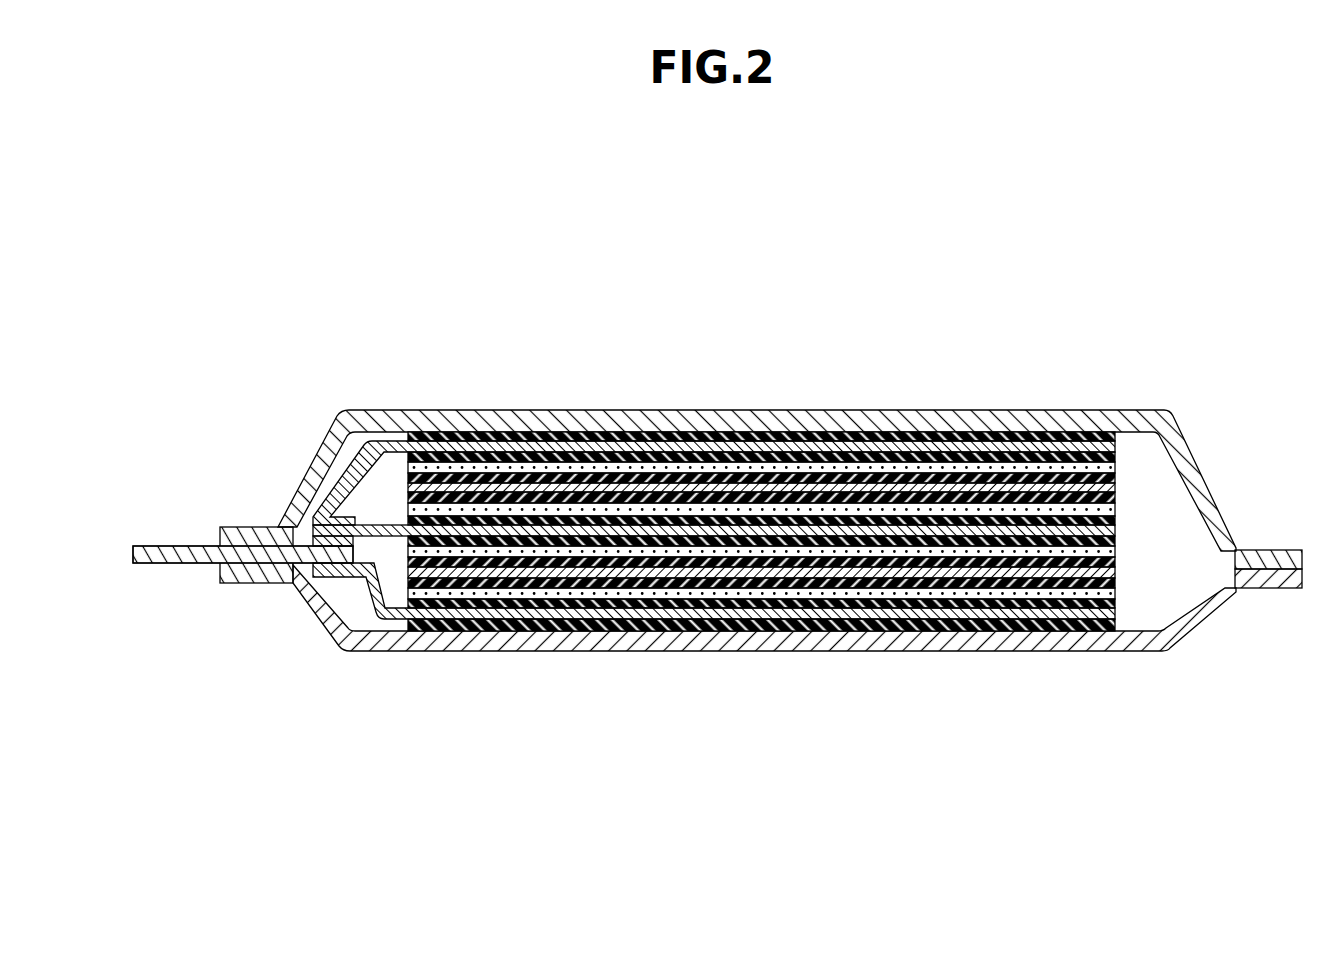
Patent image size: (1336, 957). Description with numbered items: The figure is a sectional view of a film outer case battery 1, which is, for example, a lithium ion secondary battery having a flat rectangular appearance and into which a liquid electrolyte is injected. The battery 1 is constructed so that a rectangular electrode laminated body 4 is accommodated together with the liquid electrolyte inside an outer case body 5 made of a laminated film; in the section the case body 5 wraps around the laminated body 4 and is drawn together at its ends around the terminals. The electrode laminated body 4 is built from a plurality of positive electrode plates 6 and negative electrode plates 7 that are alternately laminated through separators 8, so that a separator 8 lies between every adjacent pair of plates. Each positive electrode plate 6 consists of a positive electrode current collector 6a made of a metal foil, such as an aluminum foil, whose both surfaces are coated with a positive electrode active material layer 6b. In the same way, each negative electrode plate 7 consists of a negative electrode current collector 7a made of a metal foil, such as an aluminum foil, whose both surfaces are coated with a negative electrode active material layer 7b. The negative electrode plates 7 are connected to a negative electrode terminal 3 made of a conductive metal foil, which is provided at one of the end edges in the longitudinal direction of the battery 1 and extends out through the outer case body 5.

The film outer case battery 1 is at (721, 335).
The negative electrode terminal 3 is at (155, 565).
The electrode laminated body 4 is at (1131, 503).
The outer case body 5 is at (913, 427).
The positive electrode plate 6 is at (228, 419).
The positive electrode current collector 6a is at (407, 489).
The positive electrode active material layer 6b is at (407, 472).
The negative electrode plate 7 is at (1146, 320).
The negative electrode current collector 7a is at (1035, 447).
The negative electrode active material layer 7b is at (988, 436).
The separator 8 is at (860, 468).